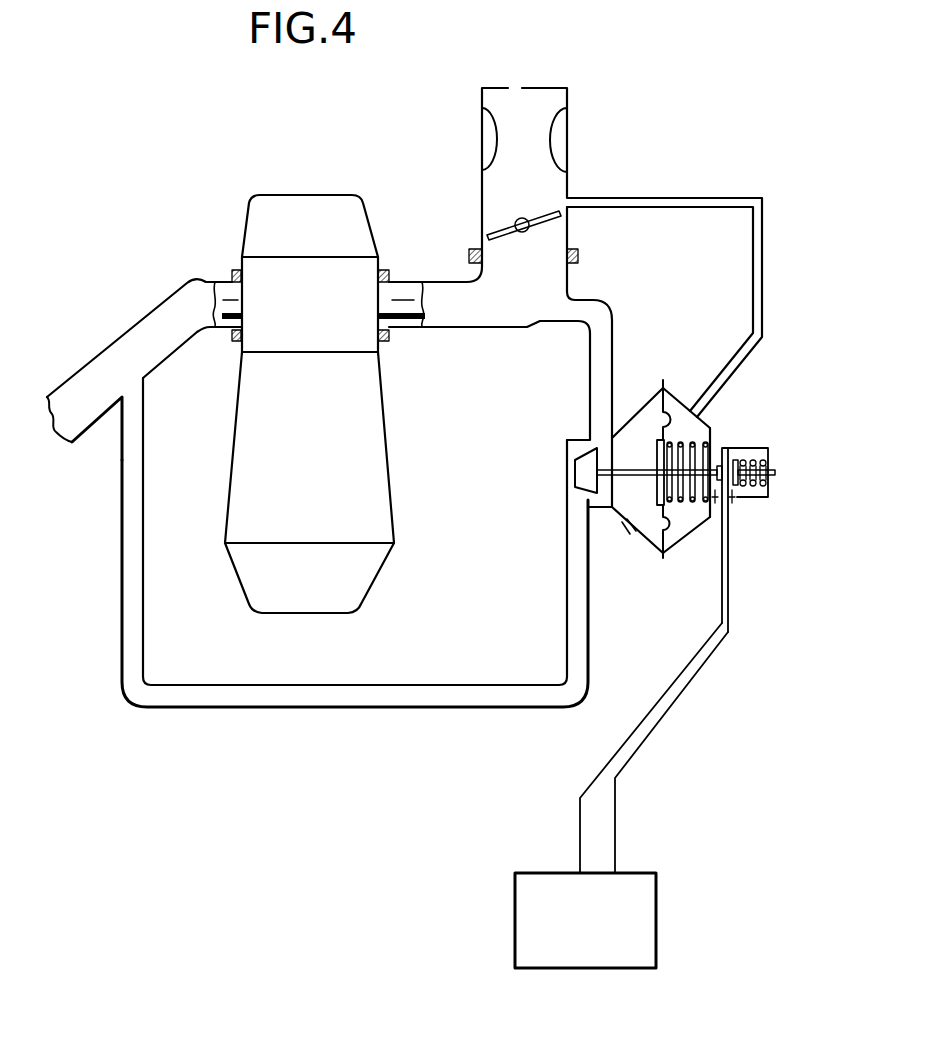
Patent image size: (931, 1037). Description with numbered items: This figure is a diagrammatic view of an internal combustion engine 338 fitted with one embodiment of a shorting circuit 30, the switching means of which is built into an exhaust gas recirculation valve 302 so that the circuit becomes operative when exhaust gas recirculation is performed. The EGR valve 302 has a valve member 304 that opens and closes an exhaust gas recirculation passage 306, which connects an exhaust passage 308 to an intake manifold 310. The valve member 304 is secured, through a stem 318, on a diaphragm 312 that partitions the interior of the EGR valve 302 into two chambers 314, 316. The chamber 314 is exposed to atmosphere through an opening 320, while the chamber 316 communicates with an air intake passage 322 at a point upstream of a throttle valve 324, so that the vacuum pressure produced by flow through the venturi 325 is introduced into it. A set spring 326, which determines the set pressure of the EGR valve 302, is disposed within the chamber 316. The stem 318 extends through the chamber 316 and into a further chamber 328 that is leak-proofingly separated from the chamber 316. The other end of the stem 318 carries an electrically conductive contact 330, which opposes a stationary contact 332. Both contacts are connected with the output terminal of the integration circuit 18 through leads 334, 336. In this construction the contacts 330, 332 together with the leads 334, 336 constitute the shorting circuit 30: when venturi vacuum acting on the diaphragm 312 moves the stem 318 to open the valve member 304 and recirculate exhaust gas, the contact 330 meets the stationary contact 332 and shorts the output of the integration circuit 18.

The integration circuit 18 is at (657, 905).
The shorting circuit 30 is at (738, 562).
The exhaust gas recirculation valve 302 is at (719, 417).
The valve member 304 is at (575, 468).
The exhaust gas recirculation passage 306 is at (577, 613).
The exhaust passage 308 is at (132, 336).
The intake manifold 310 is at (490, 316).
The diaphragm 312 is at (685, 405).
The chamber 314 is at (650, 418).
The chamber 316 is at (692, 523).
The stem 318 is at (633, 472).
The opening 320 is at (627, 530).
The air intake passage 322 is at (567, 90).
The throttle valve 324 is at (548, 223).
The venturi 325 is at (530, 138).
The set spring 326 is at (697, 492).
The chamber 328 is at (758, 453).
The electrically conductive contact 330 is at (723, 470).
The stationary contact 332 is at (738, 498).
The lead 334 is at (657, 703).
The lead 336 is at (688, 686).
The internal combustion engine 338 is at (360, 432).